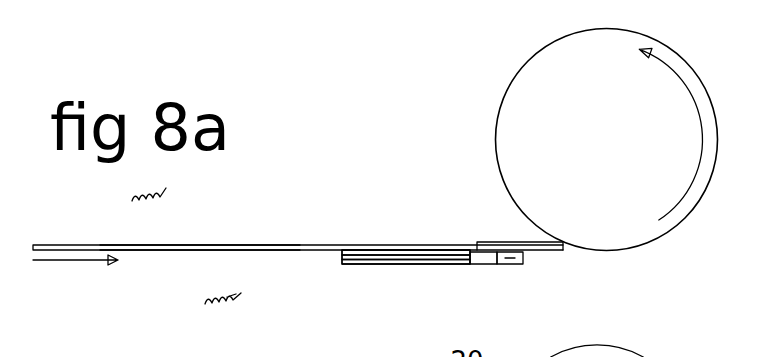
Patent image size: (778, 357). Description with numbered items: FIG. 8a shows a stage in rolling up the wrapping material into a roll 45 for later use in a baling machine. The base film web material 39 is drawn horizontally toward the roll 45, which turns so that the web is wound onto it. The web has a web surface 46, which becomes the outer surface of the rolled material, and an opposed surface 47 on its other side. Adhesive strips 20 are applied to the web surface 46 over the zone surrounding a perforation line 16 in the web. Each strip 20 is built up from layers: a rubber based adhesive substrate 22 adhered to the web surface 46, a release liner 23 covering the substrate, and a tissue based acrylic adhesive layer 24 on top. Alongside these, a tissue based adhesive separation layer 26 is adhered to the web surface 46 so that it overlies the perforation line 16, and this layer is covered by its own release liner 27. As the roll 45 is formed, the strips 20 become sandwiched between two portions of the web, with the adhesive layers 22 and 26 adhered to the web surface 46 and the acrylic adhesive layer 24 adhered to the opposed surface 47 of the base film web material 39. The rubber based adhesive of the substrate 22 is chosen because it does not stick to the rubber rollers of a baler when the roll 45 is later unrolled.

The roll 45 is at (523, 113).
The base film web material 39 is at (244, 245).
The opposed surface 47 is at (140, 244).
The web surface 46 is at (205, 251).
The adhesive material strips 20 is at (435, 265).
The rubber based adhesive substrate 22 is at (347, 265).
The release liner 23 is at (372, 265).
The tissue based acrylic adhesive layer 24 is at (400, 265).
The tissue based adhesive separation layer 26 is at (497, 259).
The release liner 27 is at (515, 270).
The perforation line 16 is at (477, 245).